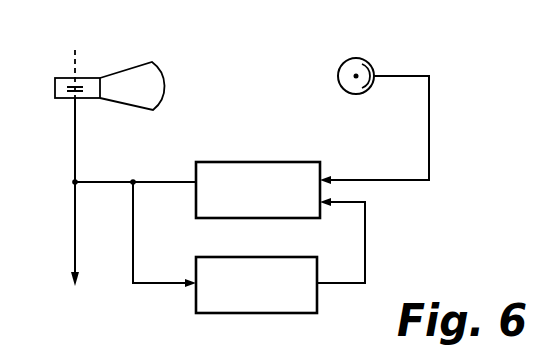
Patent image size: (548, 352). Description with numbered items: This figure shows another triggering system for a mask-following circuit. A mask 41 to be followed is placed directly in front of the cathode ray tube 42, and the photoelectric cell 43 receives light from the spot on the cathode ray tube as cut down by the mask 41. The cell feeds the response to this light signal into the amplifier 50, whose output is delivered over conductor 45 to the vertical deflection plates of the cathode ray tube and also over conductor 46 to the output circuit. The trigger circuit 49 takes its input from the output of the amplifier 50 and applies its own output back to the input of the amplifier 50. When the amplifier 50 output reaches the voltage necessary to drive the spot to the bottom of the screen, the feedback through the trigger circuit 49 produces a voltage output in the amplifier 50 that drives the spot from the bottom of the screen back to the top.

The mask 41 is at (175, 87).
The cathode ray tube 42 is at (123, 78).
The photoelectric cell 43 is at (362, 61).
The conductor 45 is at (77, 168).
The conductor 46 is at (73, 231).
The trigger circuit 49 is at (272, 264).
The amplifier 50 is at (265, 171).